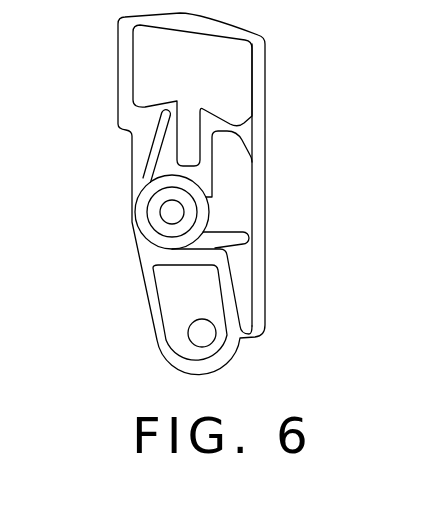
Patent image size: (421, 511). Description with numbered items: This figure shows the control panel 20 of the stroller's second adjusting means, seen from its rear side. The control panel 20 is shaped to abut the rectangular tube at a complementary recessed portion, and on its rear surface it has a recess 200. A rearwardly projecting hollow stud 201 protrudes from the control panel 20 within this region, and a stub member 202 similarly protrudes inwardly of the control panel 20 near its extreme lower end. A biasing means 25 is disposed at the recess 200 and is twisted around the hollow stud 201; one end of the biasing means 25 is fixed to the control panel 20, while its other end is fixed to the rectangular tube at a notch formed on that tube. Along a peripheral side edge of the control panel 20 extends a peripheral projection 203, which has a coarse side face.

The control panel 20 is at (274, 101).
The recess 200 is at (242, 170).
The hollow stud 201 is at (172, 212).
The stub member 202 is at (203, 335).
The peripheral projection 203 is at (117, 95).
The biasing means 25 is at (218, 240).